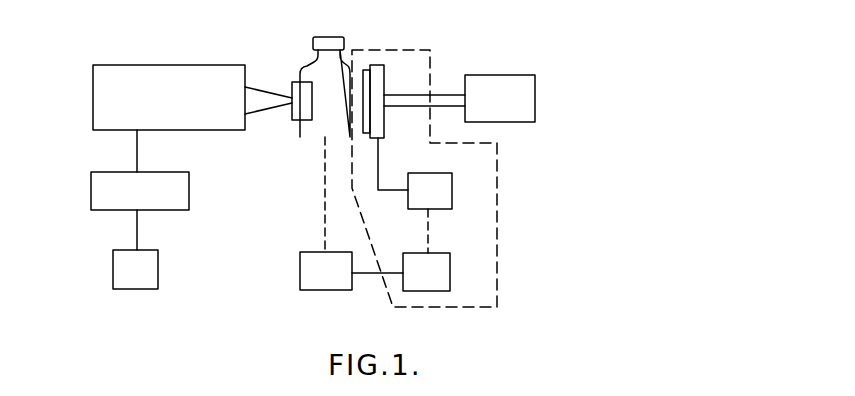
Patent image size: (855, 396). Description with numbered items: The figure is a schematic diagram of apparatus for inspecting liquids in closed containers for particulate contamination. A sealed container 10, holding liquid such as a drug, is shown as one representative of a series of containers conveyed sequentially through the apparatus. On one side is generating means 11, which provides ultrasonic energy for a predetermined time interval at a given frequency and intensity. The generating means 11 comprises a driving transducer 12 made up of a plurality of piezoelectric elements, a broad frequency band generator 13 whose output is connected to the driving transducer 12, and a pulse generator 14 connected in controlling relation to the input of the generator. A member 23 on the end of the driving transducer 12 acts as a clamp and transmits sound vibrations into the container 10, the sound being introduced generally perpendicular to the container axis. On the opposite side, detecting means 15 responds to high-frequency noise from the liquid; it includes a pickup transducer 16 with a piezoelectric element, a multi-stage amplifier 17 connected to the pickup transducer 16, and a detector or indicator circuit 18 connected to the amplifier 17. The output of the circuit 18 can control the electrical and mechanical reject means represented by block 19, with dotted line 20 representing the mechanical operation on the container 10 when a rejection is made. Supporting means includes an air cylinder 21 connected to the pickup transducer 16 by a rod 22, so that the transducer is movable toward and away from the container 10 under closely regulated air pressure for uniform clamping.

The sealed container 10 is at (291, 55).
The generating means 11 is at (212, 136).
The driving transducer 12 is at (160, 77).
The broad frequency band generator 13 is at (91, 189).
The pulse generator 14 is at (158, 270).
The detecting means 15 is at (497, 185).
The pickup transducer 16 is at (387, 118).
The amplifier 17 is at (452, 190).
The detector or indicator circuit 18 is at (450, 283).
The reject mechanism block 19 is at (320, 290).
The dotted line 20 is at (325, 220).
The air cylinder 21 is at (510, 75).
The rod 22 is at (447, 93).
The member 23 is at (295, 115).